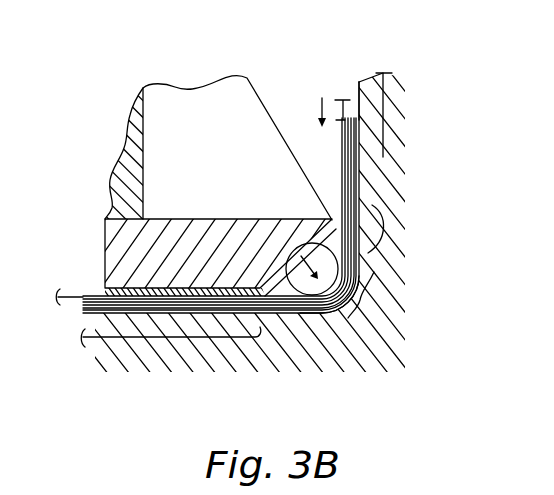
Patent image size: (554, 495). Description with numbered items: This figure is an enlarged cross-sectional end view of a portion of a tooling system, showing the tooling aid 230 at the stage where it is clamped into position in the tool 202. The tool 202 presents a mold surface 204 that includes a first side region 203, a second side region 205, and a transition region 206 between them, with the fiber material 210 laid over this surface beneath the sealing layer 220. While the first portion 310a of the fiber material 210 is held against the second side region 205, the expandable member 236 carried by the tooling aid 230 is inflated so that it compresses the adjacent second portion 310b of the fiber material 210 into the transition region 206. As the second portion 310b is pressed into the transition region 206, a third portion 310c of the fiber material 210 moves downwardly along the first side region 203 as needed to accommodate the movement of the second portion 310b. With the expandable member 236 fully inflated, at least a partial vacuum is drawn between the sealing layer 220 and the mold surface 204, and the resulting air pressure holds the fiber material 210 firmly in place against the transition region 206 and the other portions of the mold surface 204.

The tool 202 is at (402, 118).
The first side region 203 is at (357, 92).
The mold surface 204 is at (352, 96).
The second side region 205 is at (213, 220).
The transition region 206 is at (300, 314).
The fiber material 210 is at (84, 316).
The sealing layer 220 is at (78, 293).
The tooling aid 230 is at (118, 240).
The expandable member 236 is at (330, 218).
The first portion of the fiber material 310a is at (195, 338).
The second portion of the fiber material 310b is at (362, 300).
The third portion of the fiber material 310c is at (381, 172).